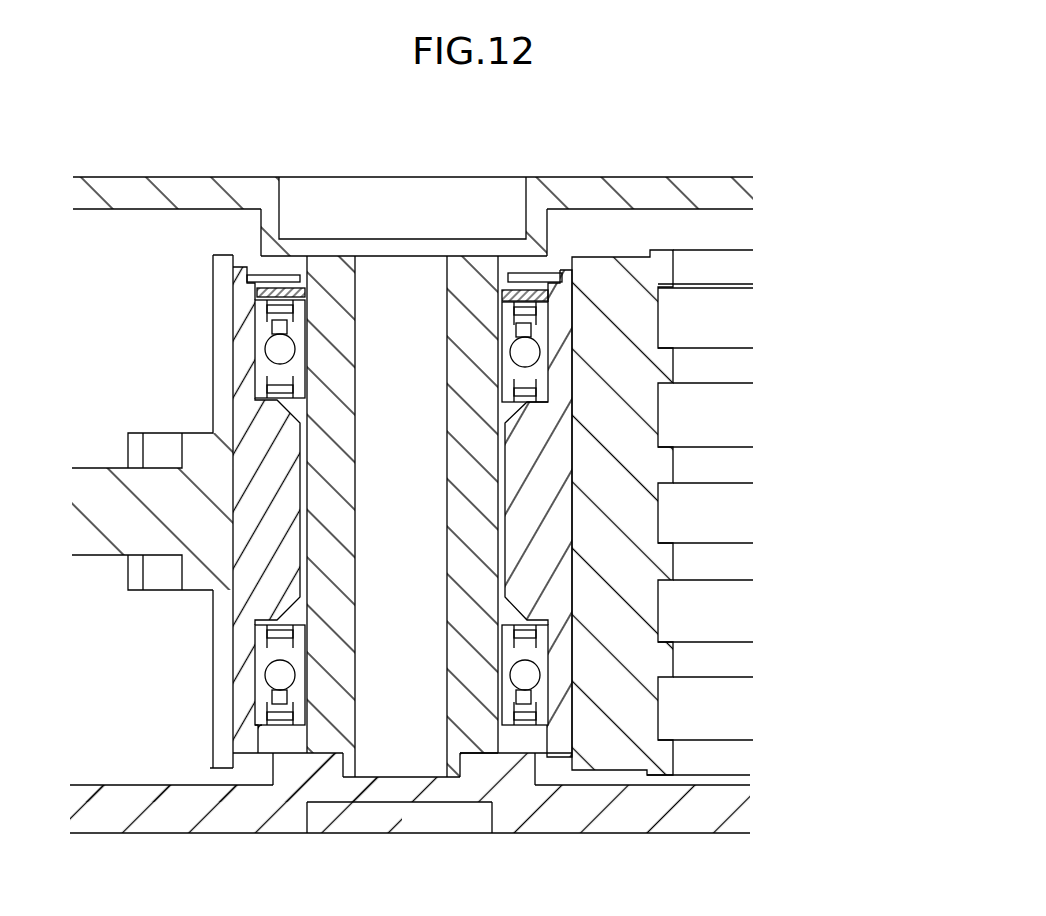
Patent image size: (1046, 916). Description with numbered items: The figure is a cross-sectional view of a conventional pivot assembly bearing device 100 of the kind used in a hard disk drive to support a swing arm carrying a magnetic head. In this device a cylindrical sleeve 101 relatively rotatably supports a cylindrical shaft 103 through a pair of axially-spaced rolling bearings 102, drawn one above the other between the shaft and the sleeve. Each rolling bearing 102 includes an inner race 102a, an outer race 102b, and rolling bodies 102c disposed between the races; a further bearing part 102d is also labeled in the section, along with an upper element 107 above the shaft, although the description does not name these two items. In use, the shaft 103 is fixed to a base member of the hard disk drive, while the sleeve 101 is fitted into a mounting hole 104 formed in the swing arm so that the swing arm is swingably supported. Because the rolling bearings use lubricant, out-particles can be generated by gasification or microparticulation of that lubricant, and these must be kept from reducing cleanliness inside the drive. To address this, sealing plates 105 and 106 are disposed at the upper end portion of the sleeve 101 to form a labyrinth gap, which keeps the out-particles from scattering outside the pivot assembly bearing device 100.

The pivot assembly bearing device 100 is at (757, 228).
The sleeve 101 is at (245, 748).
The rolling bearings 102 is at (112, 408).
The inner race 102a is at (290, 386).
The outer race 102b is at (278, 349).
The rolling bodies 102c is at (275, 334).
The outer ring 102d is at (278, 307).
The shaft 103 is at (308, 741).
The mounting hole 104 is at (213, 420).
The sealing plate 105 is at (260, 293).
The sealing plate 106 is at (268, 276).
The housing cover 107 is at (640, 190).